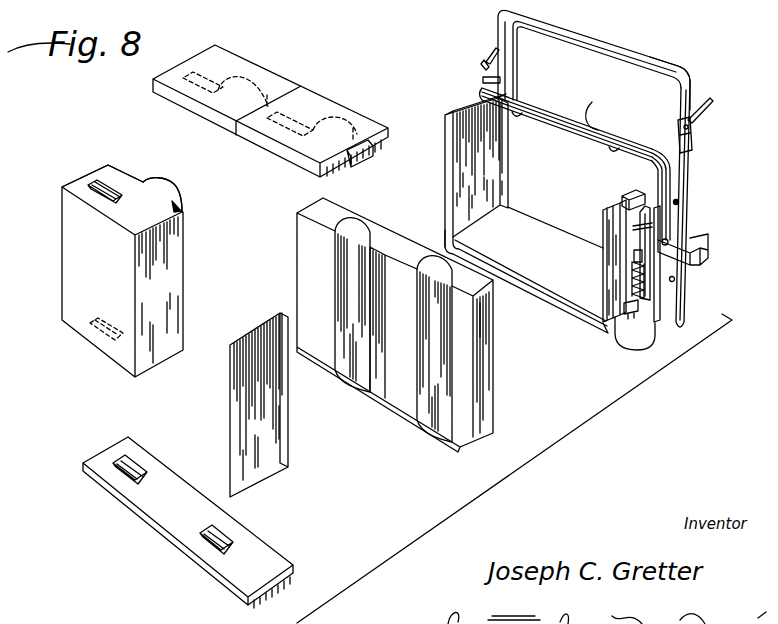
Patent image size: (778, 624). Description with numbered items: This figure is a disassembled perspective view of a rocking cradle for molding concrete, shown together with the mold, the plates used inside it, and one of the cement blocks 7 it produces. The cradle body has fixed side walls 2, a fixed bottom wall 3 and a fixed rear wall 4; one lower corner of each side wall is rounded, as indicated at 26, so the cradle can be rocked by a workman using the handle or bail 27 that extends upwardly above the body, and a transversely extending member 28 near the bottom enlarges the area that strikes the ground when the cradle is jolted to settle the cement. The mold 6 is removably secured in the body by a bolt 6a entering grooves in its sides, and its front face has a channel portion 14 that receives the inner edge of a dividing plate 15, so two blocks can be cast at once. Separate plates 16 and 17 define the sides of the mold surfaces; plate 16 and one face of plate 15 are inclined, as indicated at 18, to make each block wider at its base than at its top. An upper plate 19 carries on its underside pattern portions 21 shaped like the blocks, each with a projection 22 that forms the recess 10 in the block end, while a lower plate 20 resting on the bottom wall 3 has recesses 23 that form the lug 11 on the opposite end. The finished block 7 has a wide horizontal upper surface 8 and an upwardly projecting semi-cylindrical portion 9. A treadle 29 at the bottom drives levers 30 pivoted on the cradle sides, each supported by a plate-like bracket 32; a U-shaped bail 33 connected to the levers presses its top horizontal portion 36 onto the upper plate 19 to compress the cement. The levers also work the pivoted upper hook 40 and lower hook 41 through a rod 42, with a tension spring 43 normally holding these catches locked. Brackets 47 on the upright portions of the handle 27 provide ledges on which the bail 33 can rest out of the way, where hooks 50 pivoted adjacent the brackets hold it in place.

The side walls 2 is at (682, 184).
The bottom wall 3 is at (566, 282).
The rear wall 4 is at (603, 107).
The mold 6 is at (490, 370).
The bolt 6a is at (679, 202).
The cement block 7 is at (70, 238).
The horizontal upper surface 8 is at (127, 166).
The semi-cylindrical portion 9 is at (168, 188).
The recess 10 is at (100, 190).
The lug 11 is at (106, 345).
The channel portion 14 is at (384, 252).
The dividing plate 15 is at (285, 431).
The side plate 16 is at (497, 157).
The side plate 17 is at (605, 324).
The inclined surface 18 is at (242, 397).
The upper plate 19 is at (315, 95).
The lower plate 20 is at (288, 553).
The pattern portions 21 is at (352, 157).
The projection 22 is at (270, 131).
The recesses 23 is at (146, 466).
The rounded corner 26 is at (618, 372).
The handle 27 is at (694, 80).
The transversely extending member 28 is at (606, 47).
The treadle 29 is at (710, 250).
The levers 30 is at (685, 242).
The plate-like bracket 32 is at (652, 279).
The U-shaped bail 33 is at (669, 166).
The top horizontal portion of bail 36 is at (541, 99).
The upper hook 40 is at (631, 196).
The lower hook 41 is at (634, 308).
The rod 42 is at (638, 215).
The tension spring 43 is at (632, 282).
The brackets 47 is at (693, 138).
The hooks 50 is at (489, 55).